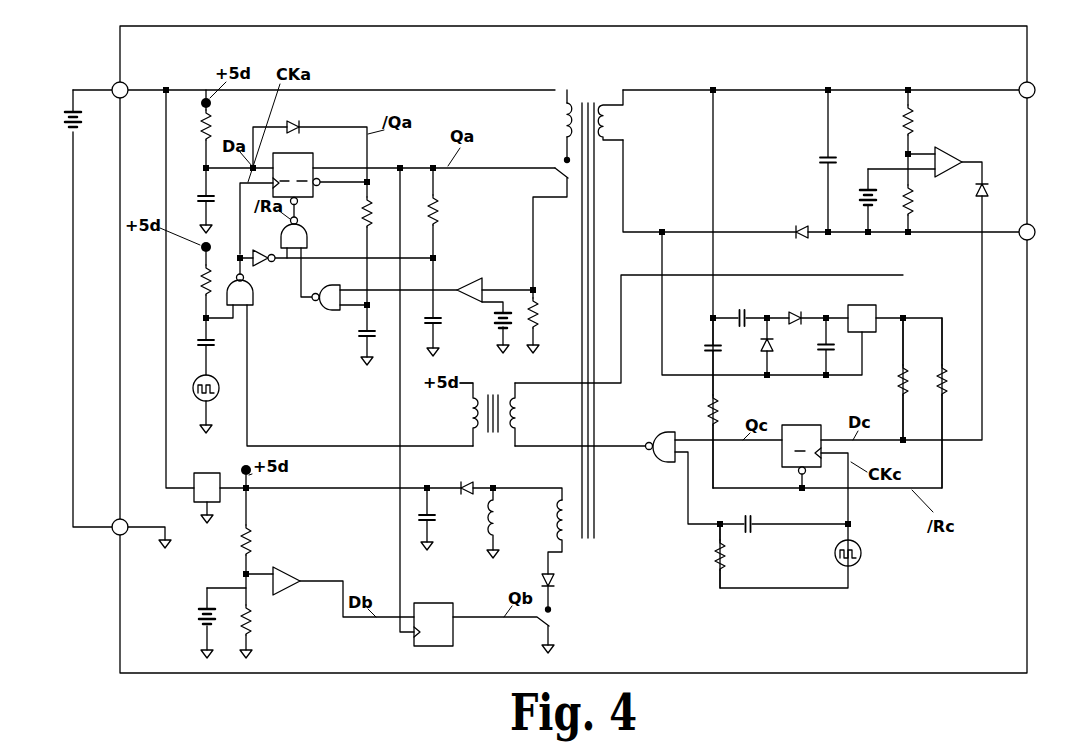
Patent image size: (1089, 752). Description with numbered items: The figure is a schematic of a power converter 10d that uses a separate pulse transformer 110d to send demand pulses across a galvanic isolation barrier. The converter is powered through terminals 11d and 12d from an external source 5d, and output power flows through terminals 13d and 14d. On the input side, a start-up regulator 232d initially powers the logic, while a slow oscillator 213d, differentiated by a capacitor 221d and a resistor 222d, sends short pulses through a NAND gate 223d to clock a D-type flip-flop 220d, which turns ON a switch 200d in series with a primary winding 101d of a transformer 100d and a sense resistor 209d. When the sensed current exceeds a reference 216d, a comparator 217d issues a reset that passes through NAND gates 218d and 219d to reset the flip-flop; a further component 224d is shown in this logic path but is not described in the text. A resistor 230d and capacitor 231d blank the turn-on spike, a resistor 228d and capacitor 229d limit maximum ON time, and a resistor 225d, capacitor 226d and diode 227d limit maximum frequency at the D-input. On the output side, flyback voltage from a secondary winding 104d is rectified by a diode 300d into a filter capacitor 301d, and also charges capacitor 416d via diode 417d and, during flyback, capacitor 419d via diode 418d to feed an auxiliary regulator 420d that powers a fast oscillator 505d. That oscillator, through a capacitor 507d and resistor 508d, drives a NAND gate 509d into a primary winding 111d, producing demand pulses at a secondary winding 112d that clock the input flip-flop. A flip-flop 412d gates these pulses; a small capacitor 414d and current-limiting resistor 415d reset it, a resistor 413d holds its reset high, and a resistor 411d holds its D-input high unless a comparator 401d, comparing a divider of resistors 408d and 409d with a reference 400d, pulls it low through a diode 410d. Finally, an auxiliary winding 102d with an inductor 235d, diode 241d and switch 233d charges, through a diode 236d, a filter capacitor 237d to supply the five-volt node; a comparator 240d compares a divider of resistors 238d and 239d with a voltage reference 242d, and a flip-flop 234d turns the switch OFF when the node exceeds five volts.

The external source 5d is at (80, 128).
The power converter 10d is at (500, 52).
The terminal 11d is at (113, 84).
The terminal 12d is at (114, 534).
The terminal 13d is at (1033, 84).
The terminal 14d is at (1033, 227).
The transformer 100d is at (590, 103).
The primary winding 101d is at (562, 120).
The auxiliary winding 102d is at (562, 521).
The secondary winding 104d is at (611, 118).
The pulse transformer 110d is at (495, 434).
The primary winding 111d is at (520, 418).
The secondary winding 112d is at (470, 418).
The switch 200d is at (562, 165).
The sense resistor 209d is at (540, 326).
The slow oscillator 213d is at (220, 394).
The reference 216d is at (444, 316).
The comparator 217d is at (492, 268).
The NAND gate 218d is at (337, 312).
The NAND gate 219d is at (302, 233).
The D-type flip-flop 220d is at (313, 162).
The capacitor 221d is at (213, 350).
The resistor 222d is at (197, 292).
The NAND gate 223d is at (255, 298).
The inverter 224d is at (272, 264).
The resistor 225d is at (212, 130).
The capacitor 226d is at (203, 190).
The diode 227d is at (298, 126).
The resistor 228d is at (358, 228).
The capacitor 229d is at (363, 338).
The resistor 230d is at (438, 213).
The capacitor 231d is at (497, 330).
The start-up regulator 232d is at (208, 473).
The switch 233d is at (551, 619).
The flip-flop 234d is at (455, 632).
The inductor 235d is at (499, 523).
The diode 236d is at (480, 477).
The filter capacitor 237d is at (435, 519).
The resistor 238d is at (252, 543).
The resistor 239d is at (263, 611).
The comparator 240d is at (290, 576).
The diode 241d is at (556, 578).
The voltage reference 242d is at (199, 622).
The diode 300d is at (795, 228).
The filter capacitor 301d is at (823, 160).
The reference 400d is at (865, 188).
The comparator 401d is at (947, 156).
The resistor 408d is at (913, 126).
The resistor 409d is at (913, 209).
The diode 410d is at (987, 181).
The resistor 411d is at (900, 382).
The flip-flop 412d is at (810, 420).
The resistor 413d is at (948, 367).
The small capacitor 414d is at (703, 347).
The current-limiting resistor 415d is at (718, 414).
The capacitor 416d is at (748, 302).
The diode 417d is at (762, 348).
The diode 418d is at (805, 302).
The capacitor 419d is at (823, 351).
The auxiliary regulator 420d is at (873, 299).
The fast oscillator 505d is at (860, 557).
The capacitor 507d is at (749, 524).
The resistor 508d is at (727, 556).
The NAND gate 509d is at (670, 421).